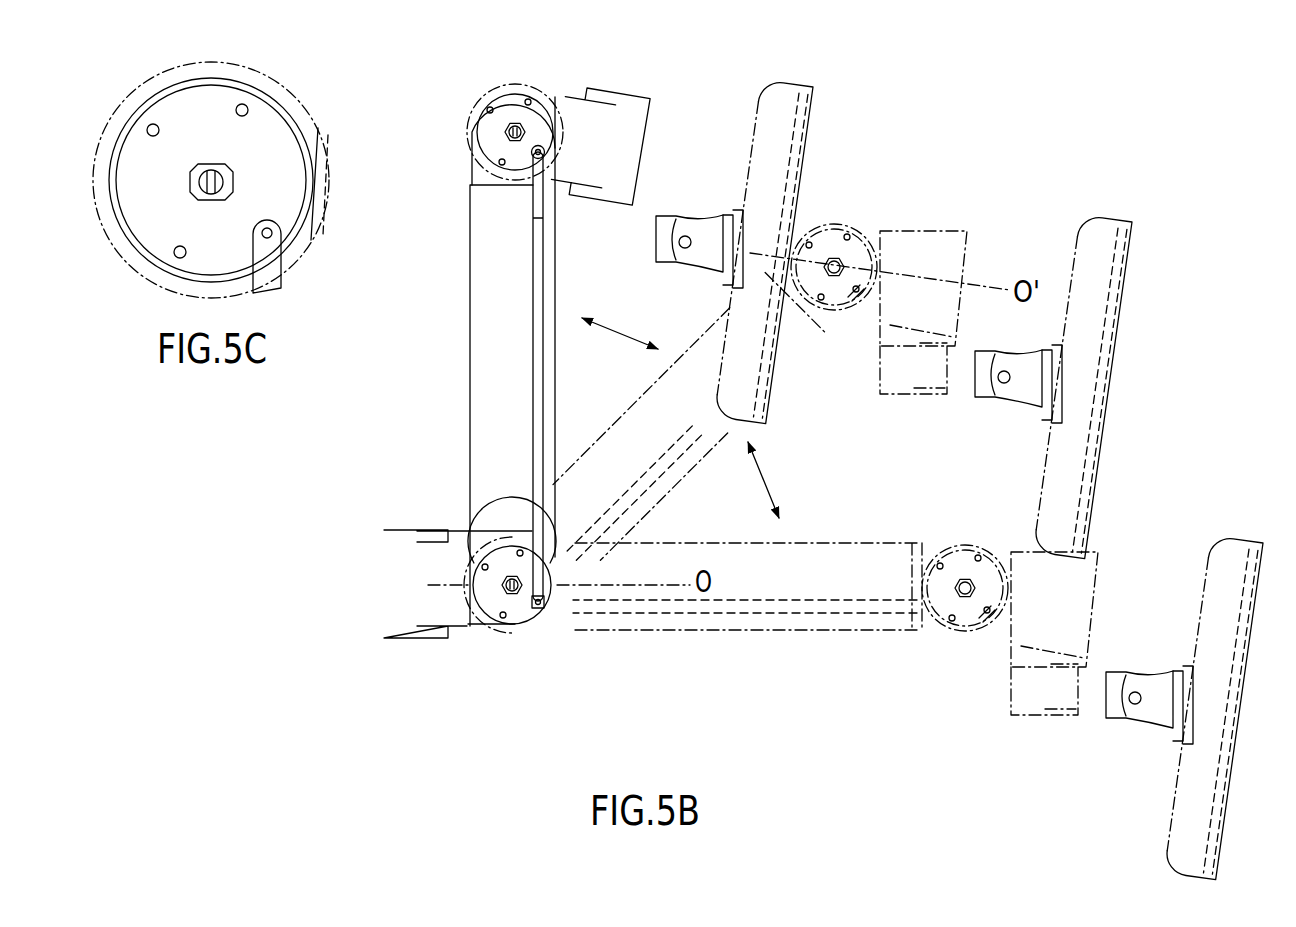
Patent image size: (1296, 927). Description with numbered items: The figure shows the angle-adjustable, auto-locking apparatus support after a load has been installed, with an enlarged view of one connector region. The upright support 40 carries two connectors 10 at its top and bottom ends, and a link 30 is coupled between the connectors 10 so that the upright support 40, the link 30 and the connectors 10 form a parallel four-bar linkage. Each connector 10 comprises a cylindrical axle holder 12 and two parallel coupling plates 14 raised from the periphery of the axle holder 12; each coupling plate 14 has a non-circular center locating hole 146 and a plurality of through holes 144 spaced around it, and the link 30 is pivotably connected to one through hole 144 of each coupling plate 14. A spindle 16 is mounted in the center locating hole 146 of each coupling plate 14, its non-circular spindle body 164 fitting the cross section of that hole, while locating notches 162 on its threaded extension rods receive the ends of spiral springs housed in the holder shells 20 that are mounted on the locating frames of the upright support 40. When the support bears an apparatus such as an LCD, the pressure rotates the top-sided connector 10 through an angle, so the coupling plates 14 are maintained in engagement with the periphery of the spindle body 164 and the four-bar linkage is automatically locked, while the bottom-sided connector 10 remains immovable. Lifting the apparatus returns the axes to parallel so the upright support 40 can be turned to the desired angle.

In FIG. 5B, the connector 10 is at (519, 368).
In FIG. 5B, the cylindrical axle holder 12 is at (633, 160).
In FIG. 5C, the coupling plate 14 is at (150, 213).
In FIG. 5B, the coupling plate 14 is at (526, 368).
In FIG. 5C, the through hole 144 is at (148, 126).
In FIG. 5B, the through hole 144 is at (486, 107).
In FIG. 5C, the non-circular center locating hole 146 is at (204, 167).
In FIG. 5B, the non-circular center locating hole 146 is at (527, 132).
In FIG. 5C, the spindle 16 is at (199, 167).
In FIG. 5B, the spindle 16 is at (520, 362).
In FIG. 5C, the locating notch 162 is at (229, 170).
In FIG. 5B, the locating notch 162 is at (523, 121).
In FIG. 5C, the non-circular spindle body 164 is at (233, 188).
In FIG. 5B, the holder shell 20 is at (478, 170).
In FIG. 5B, the link 30 is at (543, 307).
In FIG. 5B, the upright support 40 is at (497, 307).